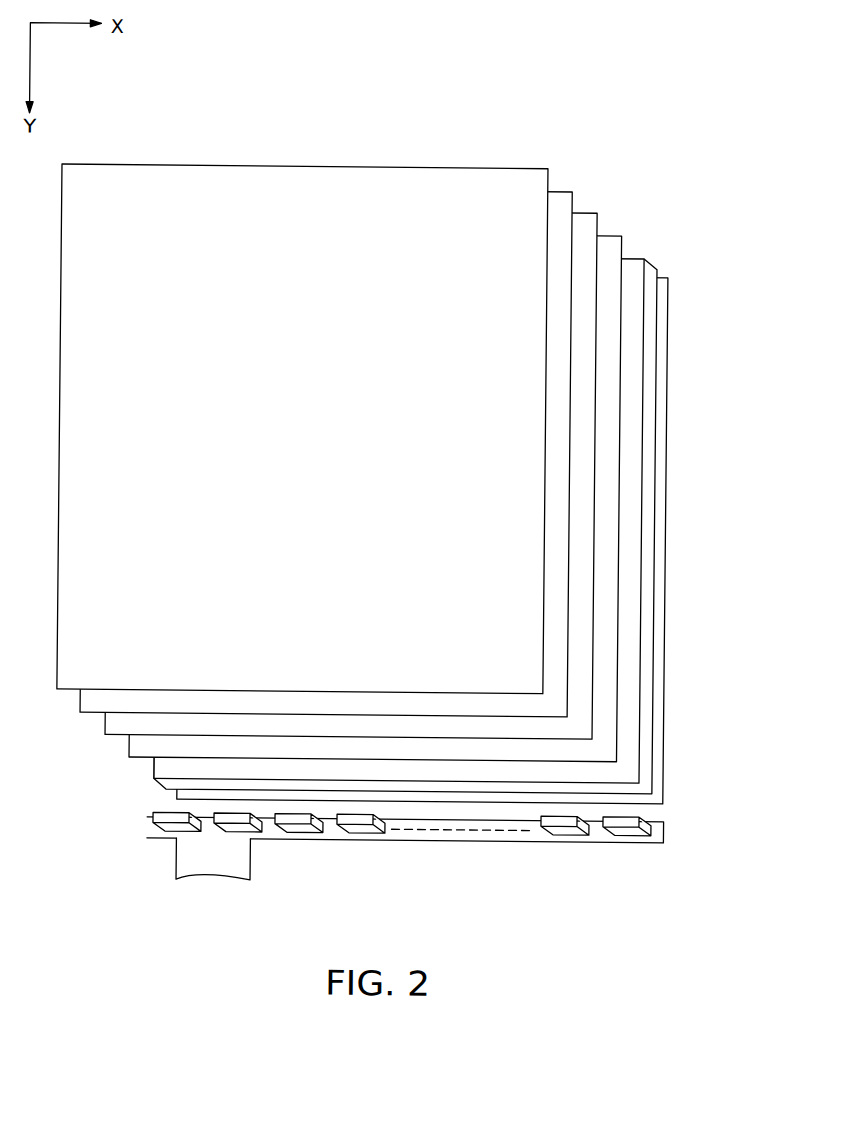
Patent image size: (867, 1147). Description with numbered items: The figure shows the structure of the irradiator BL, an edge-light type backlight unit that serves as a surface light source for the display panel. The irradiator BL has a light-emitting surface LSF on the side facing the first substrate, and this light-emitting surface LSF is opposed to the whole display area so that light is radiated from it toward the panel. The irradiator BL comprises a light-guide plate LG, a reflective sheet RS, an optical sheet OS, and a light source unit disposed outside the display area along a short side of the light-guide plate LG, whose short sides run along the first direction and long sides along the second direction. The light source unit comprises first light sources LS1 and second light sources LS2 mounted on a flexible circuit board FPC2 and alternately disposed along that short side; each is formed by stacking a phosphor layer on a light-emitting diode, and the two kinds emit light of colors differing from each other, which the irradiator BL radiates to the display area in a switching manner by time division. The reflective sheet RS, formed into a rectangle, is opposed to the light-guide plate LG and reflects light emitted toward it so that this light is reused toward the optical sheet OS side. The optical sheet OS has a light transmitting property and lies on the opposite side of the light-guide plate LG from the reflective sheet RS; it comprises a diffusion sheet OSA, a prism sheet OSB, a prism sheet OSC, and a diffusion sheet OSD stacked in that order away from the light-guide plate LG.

The irradiator BL is at (407, 469).
The light-emitting surface LSF is at (342, 189).
The optical sheet OS is at (403, 433).
The diffusion sheet OSD is at (548, 164).
The prism sheet OSC is at (572, 187).
The prism sheet OSB is at (598, 208).
The diffusion sheet OSA is at (622, 231).
The light-guide plate LG is at (658, 264).
The reflective sheet RS is at (669, 321).
The first light source LS1 is at (194, 834).
The second light source LS2 is at (247, 835).
The flexible circuit board FPC2 is at (183, 857).